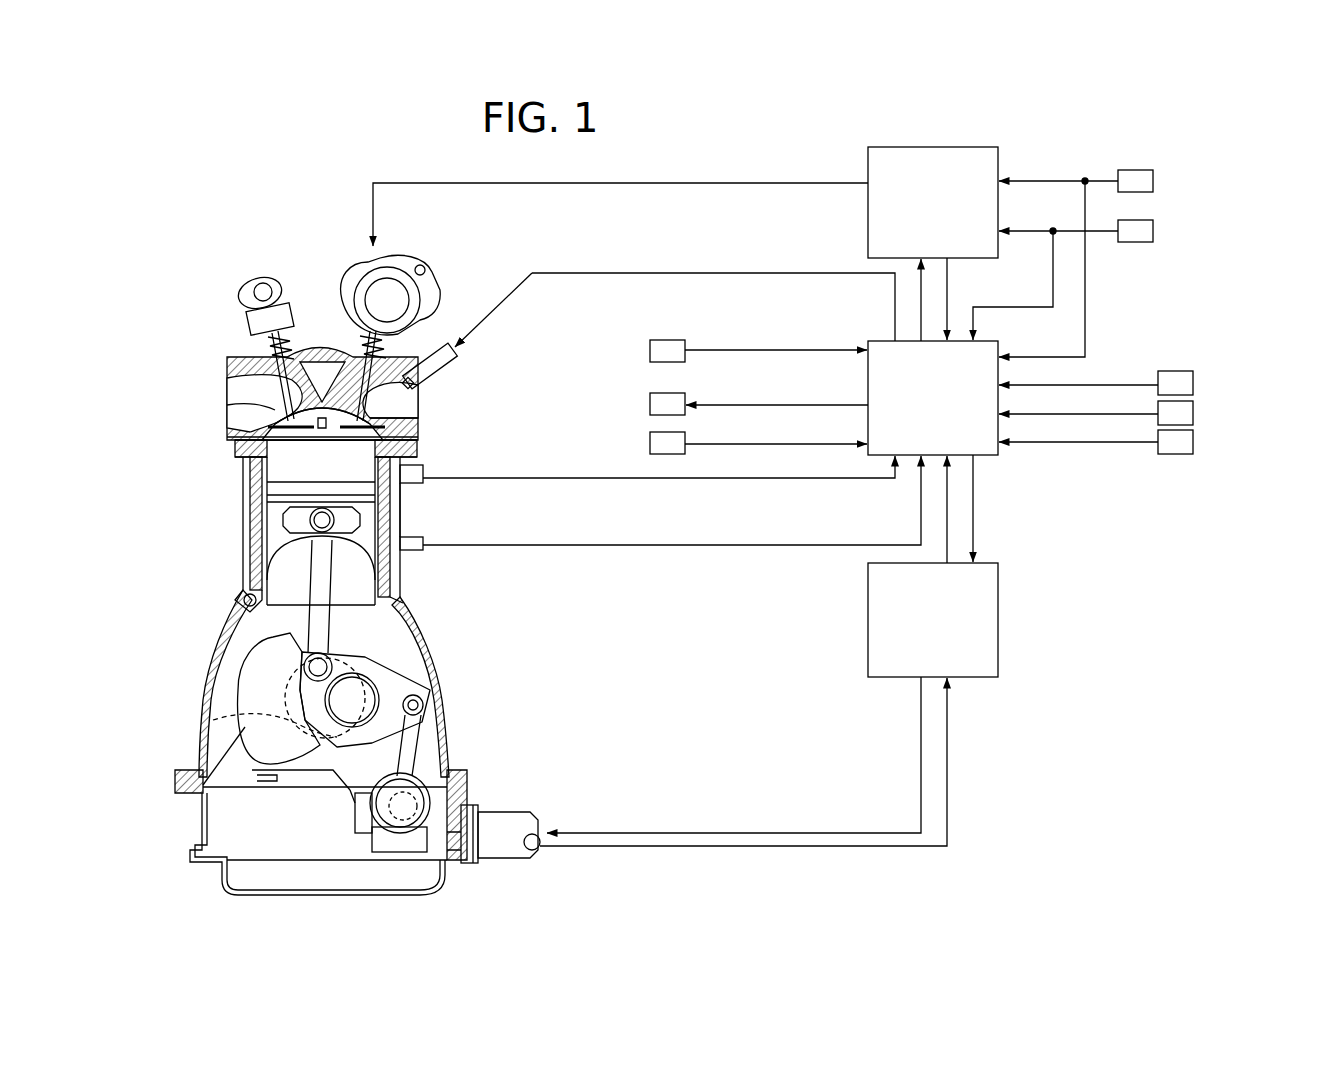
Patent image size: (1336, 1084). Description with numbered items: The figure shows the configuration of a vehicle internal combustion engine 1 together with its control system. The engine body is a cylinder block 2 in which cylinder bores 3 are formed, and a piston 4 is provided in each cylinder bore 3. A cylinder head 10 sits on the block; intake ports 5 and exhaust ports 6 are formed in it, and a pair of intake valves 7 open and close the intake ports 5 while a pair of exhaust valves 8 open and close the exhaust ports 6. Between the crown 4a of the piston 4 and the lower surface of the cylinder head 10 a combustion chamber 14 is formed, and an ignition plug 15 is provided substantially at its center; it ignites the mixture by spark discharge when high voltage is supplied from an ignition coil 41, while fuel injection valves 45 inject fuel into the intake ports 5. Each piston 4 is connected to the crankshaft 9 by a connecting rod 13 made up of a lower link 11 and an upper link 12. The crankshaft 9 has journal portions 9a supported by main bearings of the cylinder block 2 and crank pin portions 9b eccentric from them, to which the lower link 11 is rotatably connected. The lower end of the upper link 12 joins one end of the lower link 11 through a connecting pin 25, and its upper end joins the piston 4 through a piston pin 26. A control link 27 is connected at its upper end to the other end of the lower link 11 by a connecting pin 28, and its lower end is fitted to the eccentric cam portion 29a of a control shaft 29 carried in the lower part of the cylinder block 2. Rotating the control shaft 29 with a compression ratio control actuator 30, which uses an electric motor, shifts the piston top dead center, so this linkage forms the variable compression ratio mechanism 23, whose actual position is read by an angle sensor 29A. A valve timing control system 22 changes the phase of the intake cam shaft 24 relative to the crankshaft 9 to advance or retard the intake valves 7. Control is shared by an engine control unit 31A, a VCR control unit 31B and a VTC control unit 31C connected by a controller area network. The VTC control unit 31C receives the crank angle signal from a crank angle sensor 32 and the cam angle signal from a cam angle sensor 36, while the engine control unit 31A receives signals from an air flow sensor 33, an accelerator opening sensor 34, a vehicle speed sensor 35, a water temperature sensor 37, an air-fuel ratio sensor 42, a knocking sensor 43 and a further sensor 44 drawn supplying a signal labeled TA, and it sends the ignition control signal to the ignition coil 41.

The internal combustion engine 1 is at (189, 270).
The cylinder block 2 is at (405, 668).
The cylinder bore 3 is at (283, 578).
The piston 4 is at (368, 523).
The crown 4a is at (413, 487).
The intake port 5 is at (413, 385).
The exhaust port 6 is at (240, 405).
The intake valve 7 is at (360, 397).
The exhaust valve 8 is at (275, 395).
The crankshaft 9 is at (230, 688).
The journal portion 9a is at (243, 712).
The crank pin portion 9b is at (360, 700).
The cylinder head 10 is at (413, 418).
The lower link 11 is at (352, 662).
The upper link 12 is at (323, 628).
The connecting rod 13 is at (336, 576).
The combustion chamber 14 is at (285, 465).
The ignition plug 15 is at (267, 437).
The valve timing control system 22 is at (402, 256).
The variable compression ratio mechanism 23 is at (440, 657).
The intake cam shaft 24 is at (393, 305).
The connecting pin 25 is at (307, 658).
The piston pin 26 is at (307, 518).
The control link 27 is at (417, 738).
The connecting pin 28 is at (423, 705).
The control shaft 29 is at (423, 780).
The eccentric cam portion 29a is at (437, 797).
The angle sensor 29A is at (542, 849).
The compression ratio control actuator 30 is at (508, 842).
The engine control unit 31A is at (878, 340).
The VCR control unit 31B is at (868, 607).
The VTC control unit 31C is at (868, 157).
The crank angle sensor 32 is at (1153, 178).
The air flow sensor 33 is at (650, 350).
The accelerator opening sensor 34 is at (1193, 380).
The vehicle speed sensor 35 is at (1193, 415).
The cam angle sensor 36 is at (1153, 233).
The water temperature sensor 37 is at (417, 470).
The ignition coil 41 is at (650, 403).
The air-fuel ratio sensor 42 is at (1193, 452).
The knocking sensor 43 is at (427, 540).
The intake air temperature sensor 44 is at (650, 441).
The fuel injection valve 45 is at (457, 357).